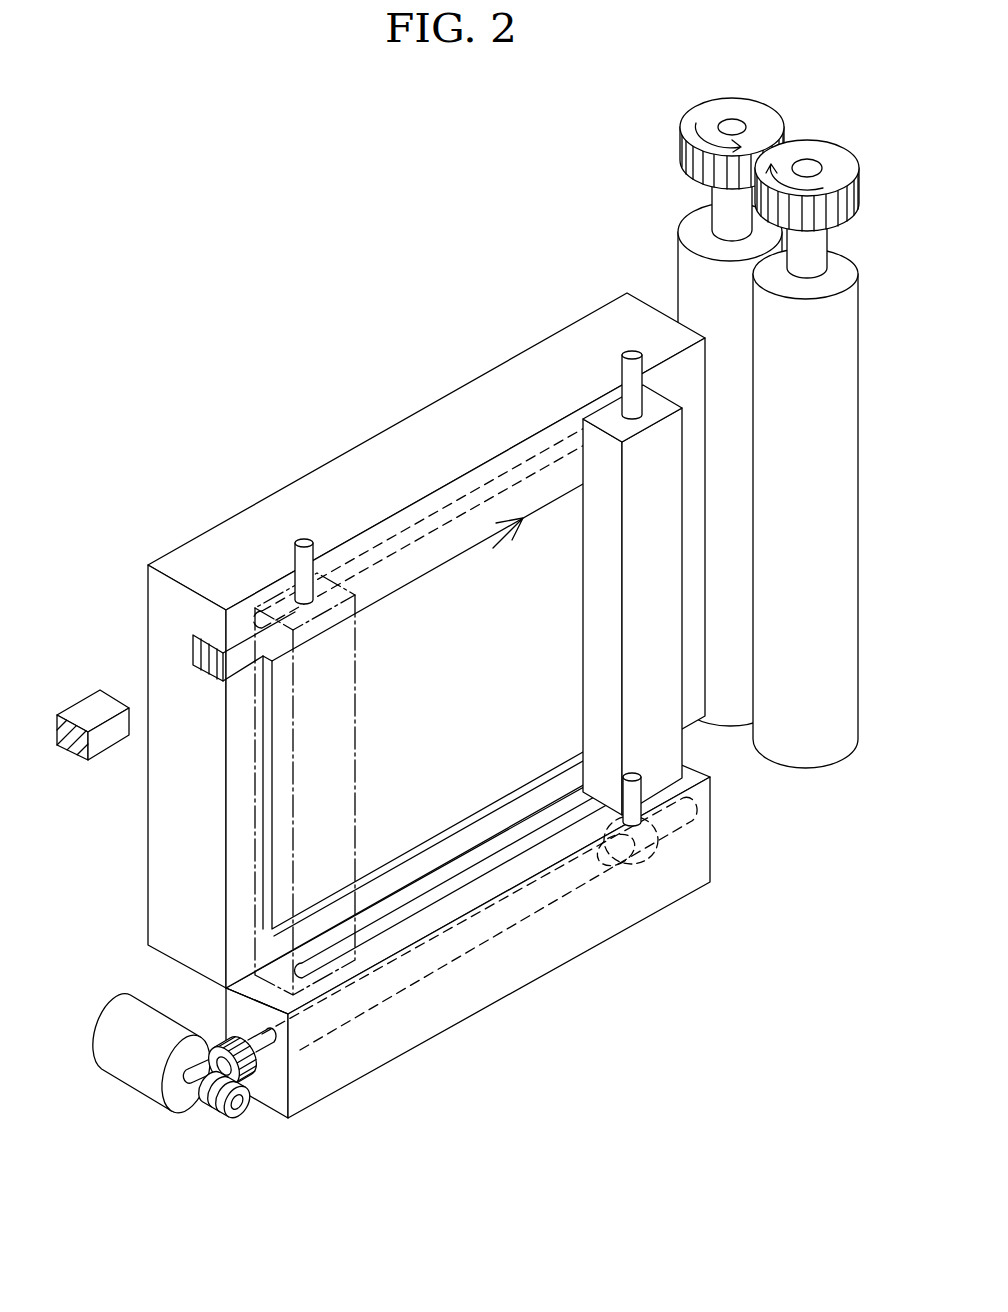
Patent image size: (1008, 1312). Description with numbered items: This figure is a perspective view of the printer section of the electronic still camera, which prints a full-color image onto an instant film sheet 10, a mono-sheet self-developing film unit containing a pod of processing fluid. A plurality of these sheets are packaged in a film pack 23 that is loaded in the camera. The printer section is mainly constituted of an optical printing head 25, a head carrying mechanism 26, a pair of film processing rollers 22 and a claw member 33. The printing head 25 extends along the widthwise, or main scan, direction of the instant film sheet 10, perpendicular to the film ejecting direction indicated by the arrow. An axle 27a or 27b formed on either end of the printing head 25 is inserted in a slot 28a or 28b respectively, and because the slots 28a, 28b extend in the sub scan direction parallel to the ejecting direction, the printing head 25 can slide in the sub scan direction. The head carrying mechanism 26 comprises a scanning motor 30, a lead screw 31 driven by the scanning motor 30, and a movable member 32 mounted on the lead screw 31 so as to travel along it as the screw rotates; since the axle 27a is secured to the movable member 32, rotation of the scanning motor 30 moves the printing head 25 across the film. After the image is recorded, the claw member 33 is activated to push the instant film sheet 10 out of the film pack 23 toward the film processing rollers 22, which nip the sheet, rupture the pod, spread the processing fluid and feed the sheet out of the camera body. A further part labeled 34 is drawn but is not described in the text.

The instant film sheet 10 is at (458, 651).
The film processing rollers 22 is at (728, 683).
The film pack 23 is at (245, 510).
The optical printing head 25 is at (600, 518).
The head carrying mechanism 26 is at (392, 1080).
The axle 27a is at (630, 782).
The axle 27b is at (632, 352).
The slot 28a is at (443, 905).
The slot 28b is at (437, 505).
The scanning motor 30 is at (147, 1053).
The lead screw 31 is at (517, 918).
The movable member 32 is at (632, 863).
The claw member 33 is at (102, 740).
The stopper 34 is at (208, 668).